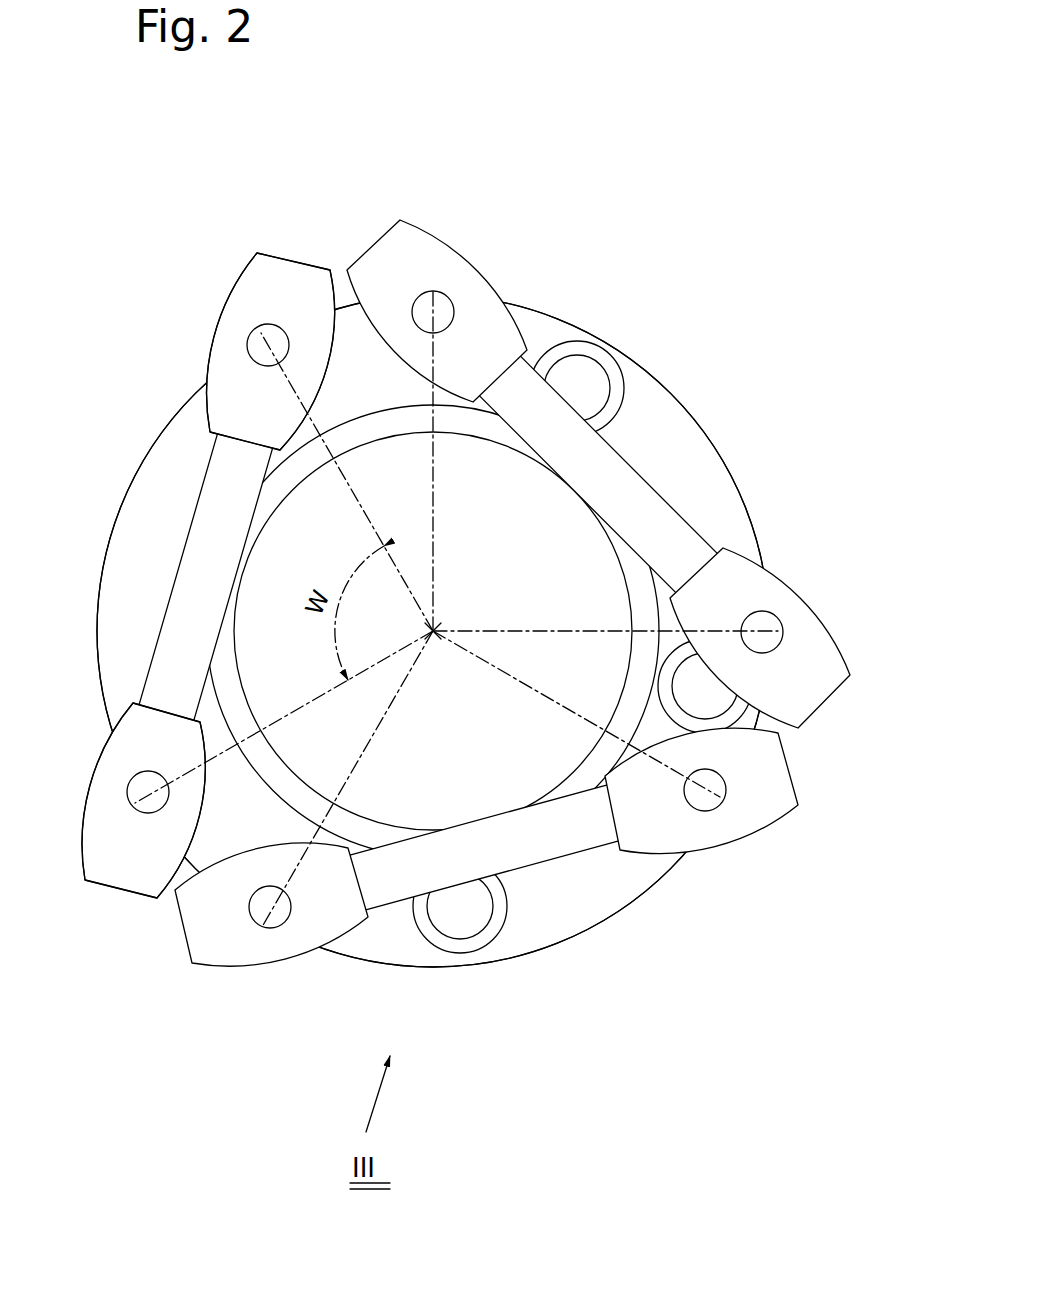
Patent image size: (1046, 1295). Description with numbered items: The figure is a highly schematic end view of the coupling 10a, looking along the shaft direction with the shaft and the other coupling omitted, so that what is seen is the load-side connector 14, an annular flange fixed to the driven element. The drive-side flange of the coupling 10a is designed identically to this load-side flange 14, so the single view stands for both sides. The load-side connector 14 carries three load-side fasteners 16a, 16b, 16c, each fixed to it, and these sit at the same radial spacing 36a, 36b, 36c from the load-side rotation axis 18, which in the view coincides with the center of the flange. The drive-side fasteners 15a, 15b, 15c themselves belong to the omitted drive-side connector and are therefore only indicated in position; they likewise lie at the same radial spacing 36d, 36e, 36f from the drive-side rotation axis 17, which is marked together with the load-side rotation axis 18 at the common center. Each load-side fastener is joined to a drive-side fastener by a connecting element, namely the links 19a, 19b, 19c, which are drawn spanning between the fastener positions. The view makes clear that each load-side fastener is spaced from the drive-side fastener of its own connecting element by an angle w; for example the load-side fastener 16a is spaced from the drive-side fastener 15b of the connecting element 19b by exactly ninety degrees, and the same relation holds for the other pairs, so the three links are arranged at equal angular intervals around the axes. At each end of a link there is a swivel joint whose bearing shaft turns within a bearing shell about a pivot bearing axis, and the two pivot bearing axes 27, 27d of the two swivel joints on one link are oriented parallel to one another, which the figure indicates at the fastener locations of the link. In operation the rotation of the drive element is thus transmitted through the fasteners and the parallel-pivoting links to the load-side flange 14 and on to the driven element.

The coupling 10a is at (446, 486).
The load-side connector 14 is at (686, 462).
The drive-side fastener 15a is at (710, 810).
The drive-side fastener 15b is at (138, 810).
The drive-side fastener 15c is at (446, 300).
The load-side fastener 16a is at (250, 338).
The load-side fastener 16b is at (266, 926).
The load-side fastener 16c is at (771, 617).
The drive-side rotation axis 17 is at (436, 628).
The load-side rotation axis 18 is at (436, 628).
The connecting element 19a is at (538, 835).
The connecting element 19b is at (217, 547).
The connecting element 19c is at (626, 463).
The pivot bearing axis 27 is at (100, 745).
The pivot bearing axis 27d is at (294, 330).
The radial spacing 36a is at (357, 507).
The radial spacing 36b is at (683, 512).
The radial spacing 36c is at (400, 925).
The radial spacing 36d is at (330, 705).
The radial spacing 36e is at (677, 735).
The radial spacing 36f is at (500, 293).